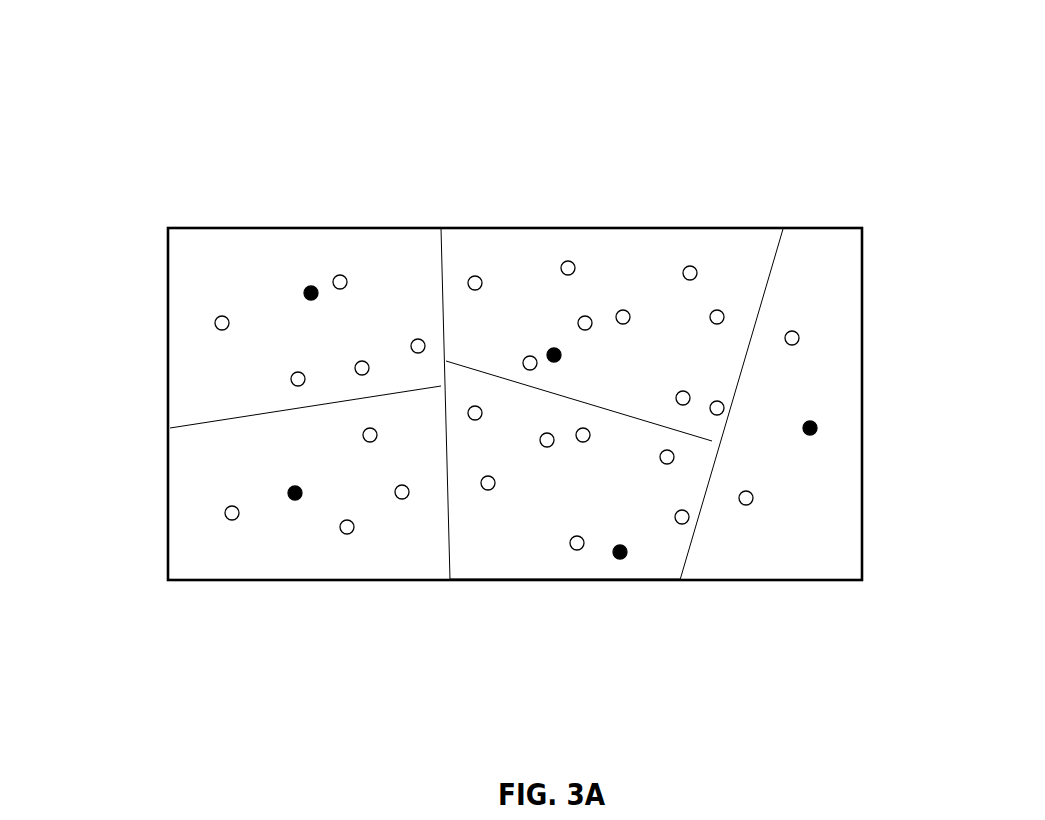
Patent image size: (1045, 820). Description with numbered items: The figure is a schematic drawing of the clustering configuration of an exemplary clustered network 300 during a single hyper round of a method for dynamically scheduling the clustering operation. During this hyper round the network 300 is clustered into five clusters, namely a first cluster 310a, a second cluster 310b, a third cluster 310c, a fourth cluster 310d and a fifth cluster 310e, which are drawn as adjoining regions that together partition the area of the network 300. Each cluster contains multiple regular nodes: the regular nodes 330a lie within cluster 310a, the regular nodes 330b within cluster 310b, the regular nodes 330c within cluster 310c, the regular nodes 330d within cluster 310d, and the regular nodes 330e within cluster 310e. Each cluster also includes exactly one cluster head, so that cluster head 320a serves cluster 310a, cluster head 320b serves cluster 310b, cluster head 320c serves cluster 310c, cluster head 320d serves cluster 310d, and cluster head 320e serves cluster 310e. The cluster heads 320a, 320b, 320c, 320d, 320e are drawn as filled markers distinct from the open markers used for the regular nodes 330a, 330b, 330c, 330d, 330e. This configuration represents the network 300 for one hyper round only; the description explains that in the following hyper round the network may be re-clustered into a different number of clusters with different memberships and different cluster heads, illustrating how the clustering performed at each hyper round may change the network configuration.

The clustered network 300 is at (120, 40).
The cluster 310a is at (273, 256).
The cluster 310b is at (614, 256).
The cluster 310c is at (288, 562).
The cluster 310d is at (541, 560).
The cluster 310e is at (810, 368).
The cluster head 320a is at (316, 296).
The cluster head 320b is at (560, 358).
The cluster head 320c is at (300, 490).
The cluster head 320d is at (620, 545).
The cluster head 320e is at (810, 435).
The regular nodes 330a is at (222, 316).
The regular nodes 330b is at (475, 276).
The regular nodes 330c is at (232, 506).
The regular nodes 330d is at (475, 420).
The regular nodes 330e is at (797, 330).